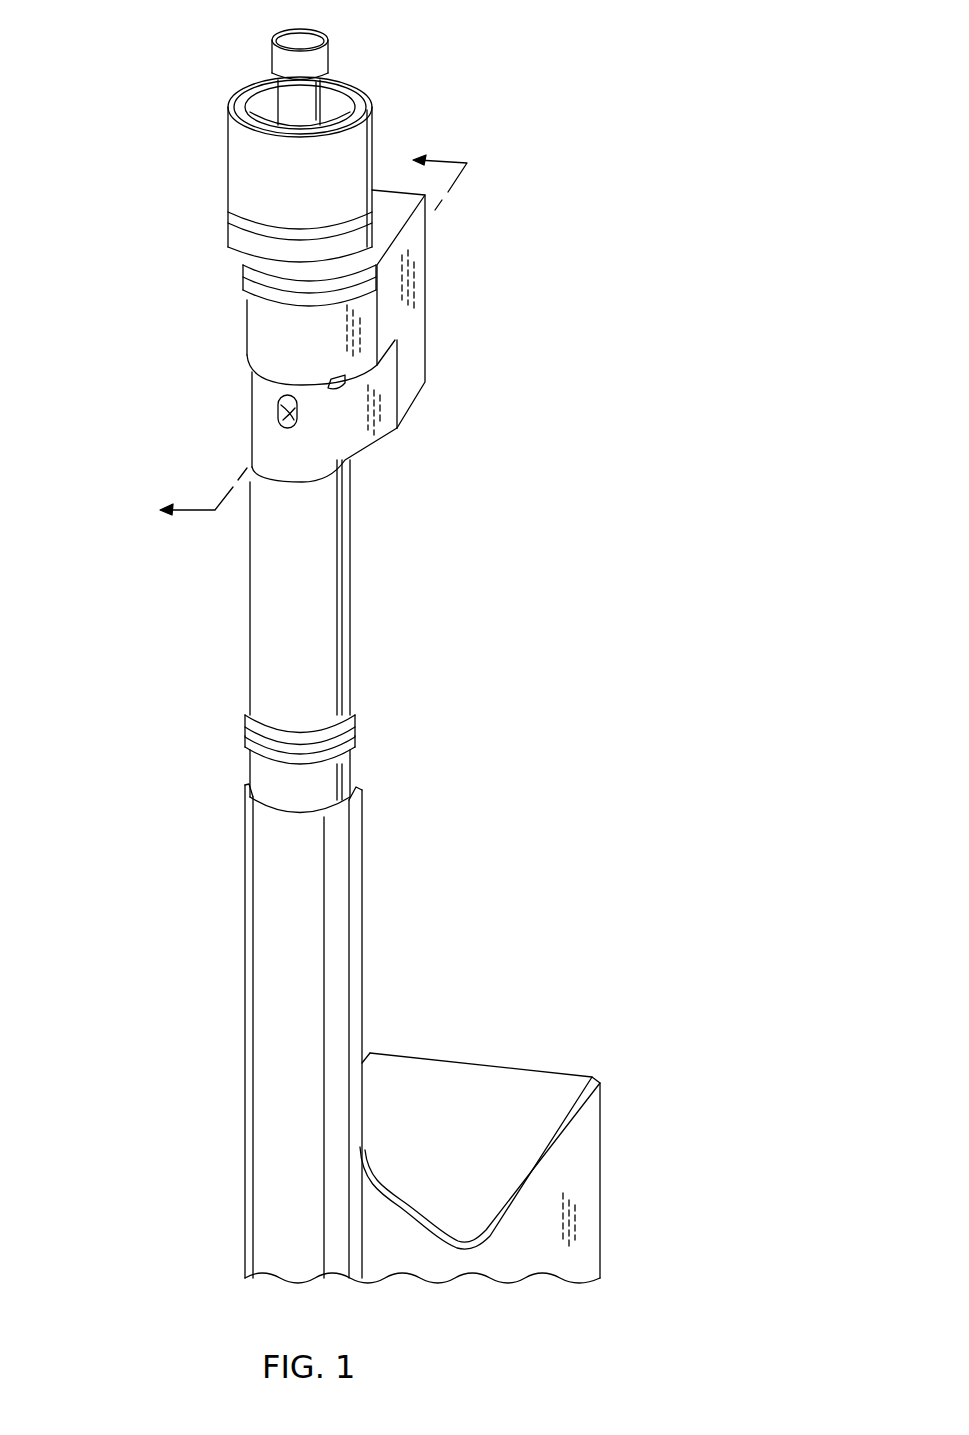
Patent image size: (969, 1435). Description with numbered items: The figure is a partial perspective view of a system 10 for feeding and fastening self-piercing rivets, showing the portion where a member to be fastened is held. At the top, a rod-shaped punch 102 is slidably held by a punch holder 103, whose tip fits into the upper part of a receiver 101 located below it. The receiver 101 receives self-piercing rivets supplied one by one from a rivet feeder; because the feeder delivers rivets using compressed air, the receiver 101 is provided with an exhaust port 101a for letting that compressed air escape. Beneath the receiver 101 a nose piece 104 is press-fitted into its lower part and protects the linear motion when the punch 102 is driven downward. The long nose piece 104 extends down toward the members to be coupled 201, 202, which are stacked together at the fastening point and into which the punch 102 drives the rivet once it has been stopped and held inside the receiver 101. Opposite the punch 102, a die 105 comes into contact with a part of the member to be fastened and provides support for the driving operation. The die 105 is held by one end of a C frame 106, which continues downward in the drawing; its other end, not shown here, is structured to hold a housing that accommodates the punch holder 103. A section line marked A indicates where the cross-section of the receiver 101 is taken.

The system for feeding and fastening rivets 10 is at (598, 180).
The receiver 101 is at (397, 428).
The exhaust port 101a is at (278, 414).
The punch 102 is at (328, 53).
The punch holder 103 is at (373, 127).
The nose piece 104 is at (351, 586).
The die 105 is at (352, 768).
The C frame 106 is at (362, 917).
The member to be coupled 201 is at (356, 722).
The member to be coupled 202 is at (357, 745).